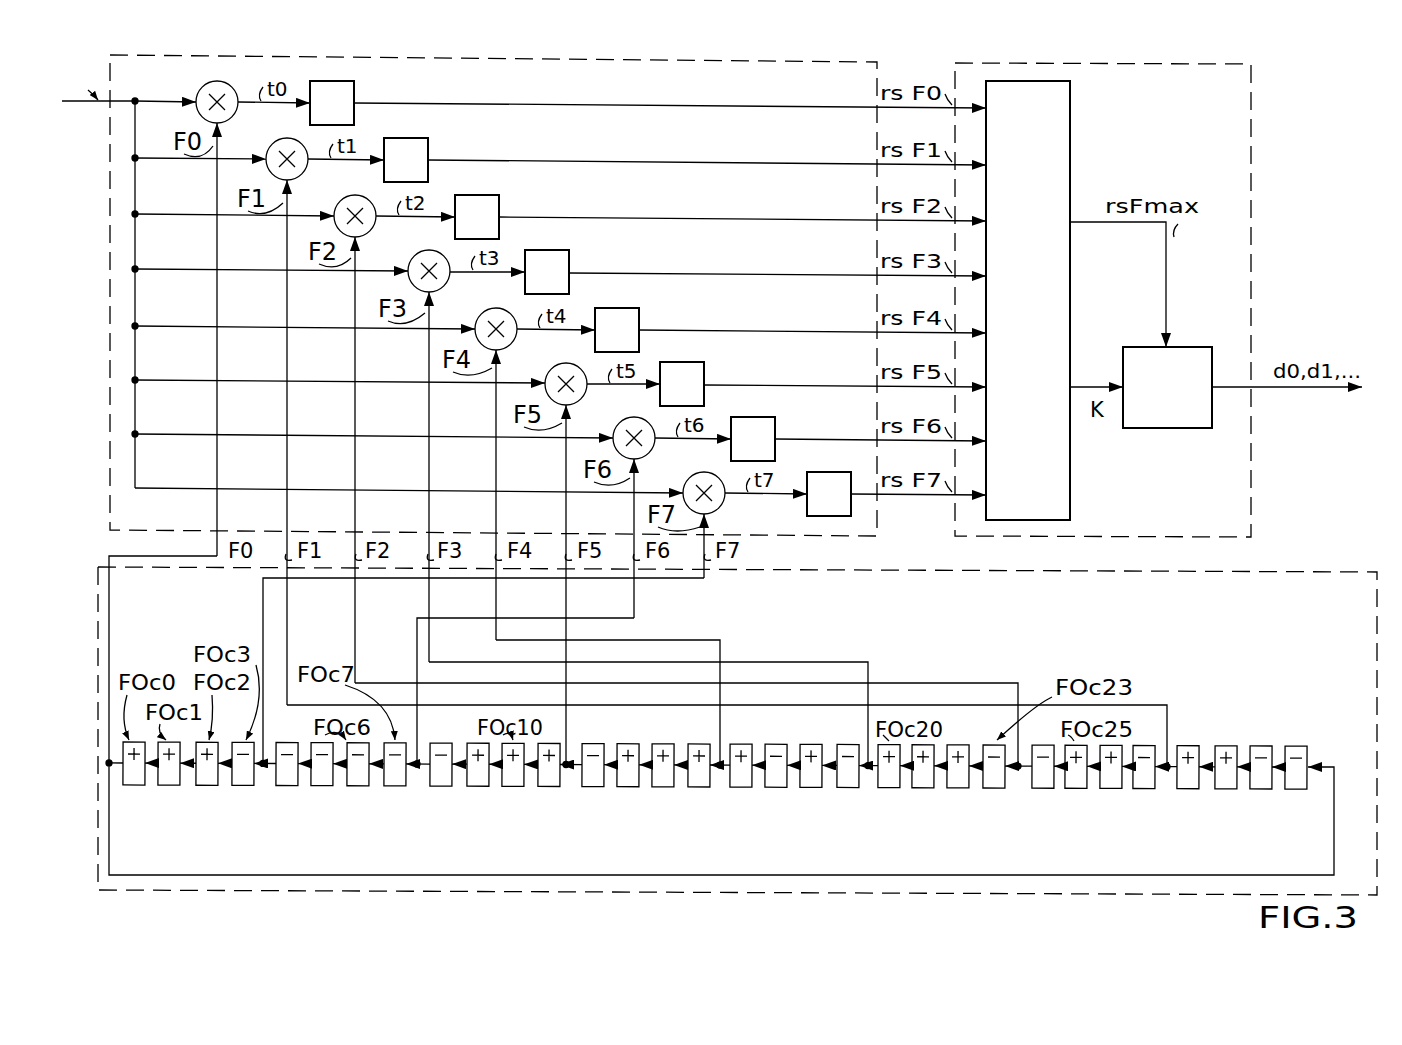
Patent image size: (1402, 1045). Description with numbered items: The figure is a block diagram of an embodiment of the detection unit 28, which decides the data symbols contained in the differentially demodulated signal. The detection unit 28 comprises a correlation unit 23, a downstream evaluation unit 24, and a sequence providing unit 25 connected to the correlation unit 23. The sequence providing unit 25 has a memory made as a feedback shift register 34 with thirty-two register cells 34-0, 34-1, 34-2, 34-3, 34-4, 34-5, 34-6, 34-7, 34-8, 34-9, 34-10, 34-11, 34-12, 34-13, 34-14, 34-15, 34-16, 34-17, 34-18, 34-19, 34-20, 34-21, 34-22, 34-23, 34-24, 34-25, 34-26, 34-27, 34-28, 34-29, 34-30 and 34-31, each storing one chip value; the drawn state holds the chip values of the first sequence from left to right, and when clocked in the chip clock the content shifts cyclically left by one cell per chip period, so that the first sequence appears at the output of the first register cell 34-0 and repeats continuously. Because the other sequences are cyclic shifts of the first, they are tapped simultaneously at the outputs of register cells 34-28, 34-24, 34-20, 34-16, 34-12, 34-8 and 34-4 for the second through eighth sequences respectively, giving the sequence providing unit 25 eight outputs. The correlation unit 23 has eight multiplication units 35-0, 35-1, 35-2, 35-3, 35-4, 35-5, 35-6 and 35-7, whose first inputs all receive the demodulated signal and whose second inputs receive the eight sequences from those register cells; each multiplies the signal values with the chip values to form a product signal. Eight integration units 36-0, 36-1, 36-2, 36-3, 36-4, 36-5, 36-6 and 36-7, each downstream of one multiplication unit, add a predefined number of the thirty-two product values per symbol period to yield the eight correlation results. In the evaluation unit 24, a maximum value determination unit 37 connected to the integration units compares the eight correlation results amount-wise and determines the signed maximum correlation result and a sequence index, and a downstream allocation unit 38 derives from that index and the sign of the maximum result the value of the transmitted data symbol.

The correlation unit 23 is at (877, 534).
The evaluation unit 24 is at (1252, 500).
The sequence providing unit 25 is at (1030, 571).
The detection unit 28 is at (104, 529).
The feedback shift register 34 is at (1322, 681).
The multiplication unit 35-0 is at (226, 121).
The multiplication unit 35-1 is at (296, 178).
The multiplication unit 35-2 is at (364, 235).
The multiplication unit 35-3 is at (438, 290).
The multiplication unit 35-4 is at (505, 348).
The multiplication unit 35-5 is at (575, 403).
The multiplication unit 35-6 is at (643, 457).
The multiplication unit 35-7 is at (713, 512).
The integration unit 36-0 is at (336, 81).
The integration unit 36-1 is at (410, 138).
The integration unit 36-2 is at (481, 195).
The integration unit 36-3 is at (551, 250).
The integration unit 36-4 is at (621, 308).
The integration unit 36-5 is at (686, 362).
The integration unit 36-6 is at (757, 417).
The integration unit 36-7 is at (814, 457).
The maximum value determination unit 37 is at (1072, 473).
The allocation unit 38 is at (1152, 429).
The register cell 34-0 is at (134, 785).
The register cell 34-1 is at (177, 785).
The register cell 34-2 is at (207, 785).
The register cell 34-3 is at (251, 785).
The register cell 34-4 is at (287, 785).
The register cell 34-5 is at (330, 785).
The register cell 34-6 is at (358, 785).
The register cell 34-7 is at (403, 785).
The register cell 34-8 is at (441, 785).
The register cell 34-9 is at (486, 785).
The register cell 34-10 is at (513, 785).
The register cell 34-11 is at (557, 785).
The register cell 34-12 is at (593, 785).
The register cell 34-13 is at (636, 785).
The register cell 34-14 is at (663, 785).
The register cell 34-15 is at (707, 785).
The register cell 34-16 is at (741, 785).
The register cell 34-17 is at (784, 785).
The register cell 34-18 is at (811, 785).
The register cell 34-19 is at (856, 785).
The register cell 34-20 is at (889, 785).
The register cell 34-21 is at (931, 785).
The register cell 34-22 is at (958, 785).
The register cell 34-23 is at (1002, 785).
The register cell 34-24 is at (1043, 785).
The register cell 34-25 is at (1084, 785).
The register cell 34-26 is at (1111, 785).
The register cell 34-27 is at (1152, 785).
The register cell 34-28 is at (1199, 785).
The register cell 34-29 is at (1225, 742).
The register cell 34-30 is at (1268, 785).
The register cell 34-31 is at (1297, 742).